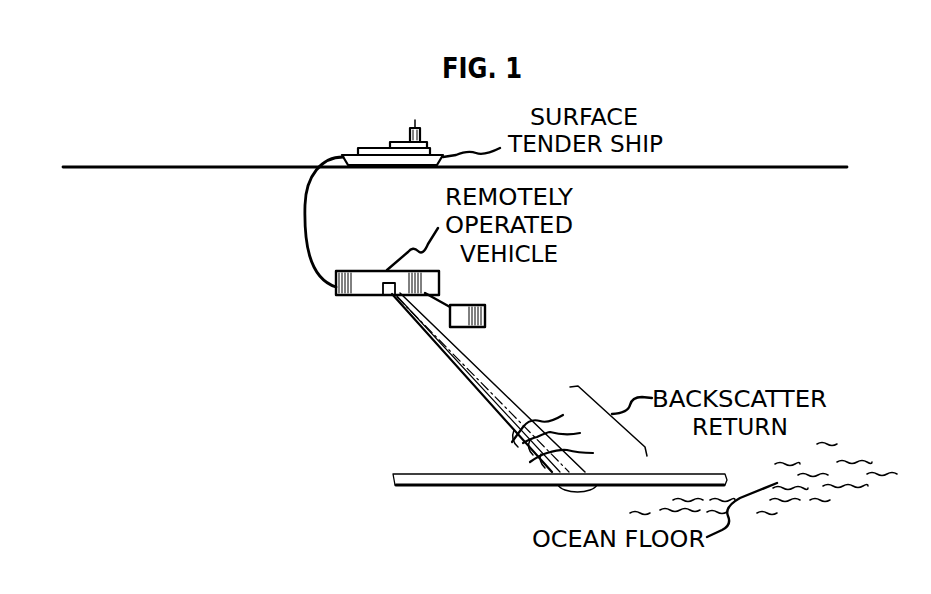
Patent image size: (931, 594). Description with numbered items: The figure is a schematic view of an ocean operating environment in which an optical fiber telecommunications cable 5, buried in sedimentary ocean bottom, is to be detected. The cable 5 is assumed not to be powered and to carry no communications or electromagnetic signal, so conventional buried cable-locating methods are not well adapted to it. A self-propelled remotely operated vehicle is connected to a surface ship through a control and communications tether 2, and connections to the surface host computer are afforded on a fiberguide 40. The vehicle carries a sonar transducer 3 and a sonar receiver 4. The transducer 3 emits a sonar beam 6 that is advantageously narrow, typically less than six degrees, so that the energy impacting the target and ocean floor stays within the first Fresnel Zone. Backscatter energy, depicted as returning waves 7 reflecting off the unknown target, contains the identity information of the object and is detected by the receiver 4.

The fiberguide 40 is at (197, 222).
The control and communications tether 2 is at (303, 205).
The sonar transducer 3 is at (388, 294).
The sonar receiver 4 is at (485, 311).
The cable 5 is at (395, 478).
The sonar beam 6 is at (455, 363).
The returning waves 7 is at (562, 433).